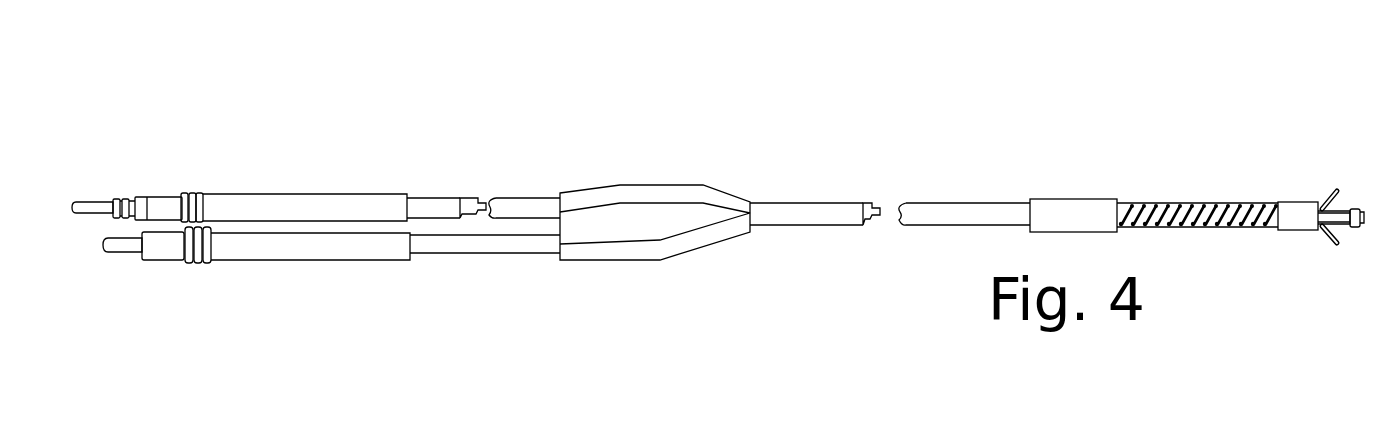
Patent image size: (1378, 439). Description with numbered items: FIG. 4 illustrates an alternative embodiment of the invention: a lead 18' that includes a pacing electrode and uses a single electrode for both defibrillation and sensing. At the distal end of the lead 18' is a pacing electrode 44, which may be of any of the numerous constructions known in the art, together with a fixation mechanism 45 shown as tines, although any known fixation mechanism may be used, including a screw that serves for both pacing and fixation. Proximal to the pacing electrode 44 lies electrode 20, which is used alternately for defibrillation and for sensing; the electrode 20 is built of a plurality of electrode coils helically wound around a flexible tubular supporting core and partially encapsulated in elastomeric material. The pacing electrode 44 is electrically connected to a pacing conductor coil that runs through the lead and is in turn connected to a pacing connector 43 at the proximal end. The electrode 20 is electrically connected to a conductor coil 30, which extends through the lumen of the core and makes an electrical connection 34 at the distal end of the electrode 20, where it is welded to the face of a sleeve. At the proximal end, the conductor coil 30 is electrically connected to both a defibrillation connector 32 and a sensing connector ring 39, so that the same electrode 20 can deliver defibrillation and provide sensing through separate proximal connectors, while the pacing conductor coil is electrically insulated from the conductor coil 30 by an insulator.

The lead 18' is at (718, 233).
The electrode 20 is at (1182, 193).
The conductor coil 30 is at (872, 208).
The defibrillation connector 32 is at (122, 250).
The connection 34 is at (1287, 195).
The sensing connector ring 39 is at (163, 197).
The pacing connector 43 is at (82, 200).
The pacing electrode 44 is at (1358, 234).
The fixation mechanism 45 is at (1338, 190).